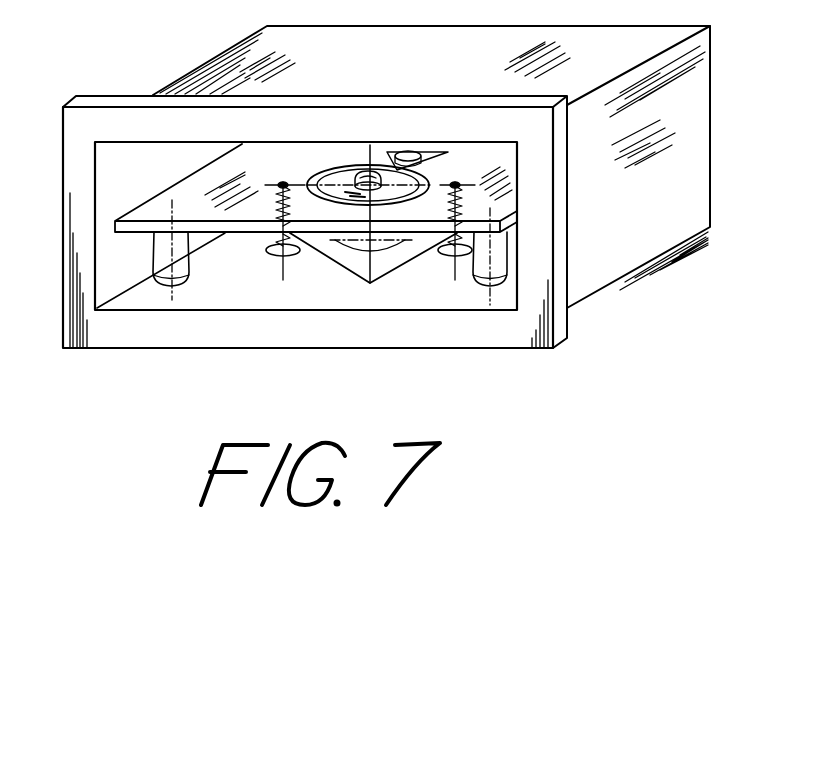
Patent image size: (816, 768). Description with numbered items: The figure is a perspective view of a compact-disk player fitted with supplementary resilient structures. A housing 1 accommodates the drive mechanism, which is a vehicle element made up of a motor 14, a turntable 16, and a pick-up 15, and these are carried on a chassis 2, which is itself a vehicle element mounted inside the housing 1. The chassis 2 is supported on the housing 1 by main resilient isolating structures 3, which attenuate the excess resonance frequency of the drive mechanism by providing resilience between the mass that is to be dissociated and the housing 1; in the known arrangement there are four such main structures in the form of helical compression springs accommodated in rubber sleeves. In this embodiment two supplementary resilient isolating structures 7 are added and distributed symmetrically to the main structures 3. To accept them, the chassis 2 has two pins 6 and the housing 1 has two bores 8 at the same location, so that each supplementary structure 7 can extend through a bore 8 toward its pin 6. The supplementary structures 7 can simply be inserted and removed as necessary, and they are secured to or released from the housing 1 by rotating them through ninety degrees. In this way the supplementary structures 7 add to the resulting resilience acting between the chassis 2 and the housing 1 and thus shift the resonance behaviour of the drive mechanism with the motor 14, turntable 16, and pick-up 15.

The housing 1 is at (612, 258).
The chassis 2 is at (197, 187).
The main resilient isolating structures 3 is at (185, 288).
The pins 6 is at (278, 183).
The supplementary resilient isolating structures 7 is at (378, 292).
The bores 8 is at (276, 262).
The motor 14 is at (340, 173).
The pick-up 15 is at (413, 150).
The turntable 16 is at (370, 176).